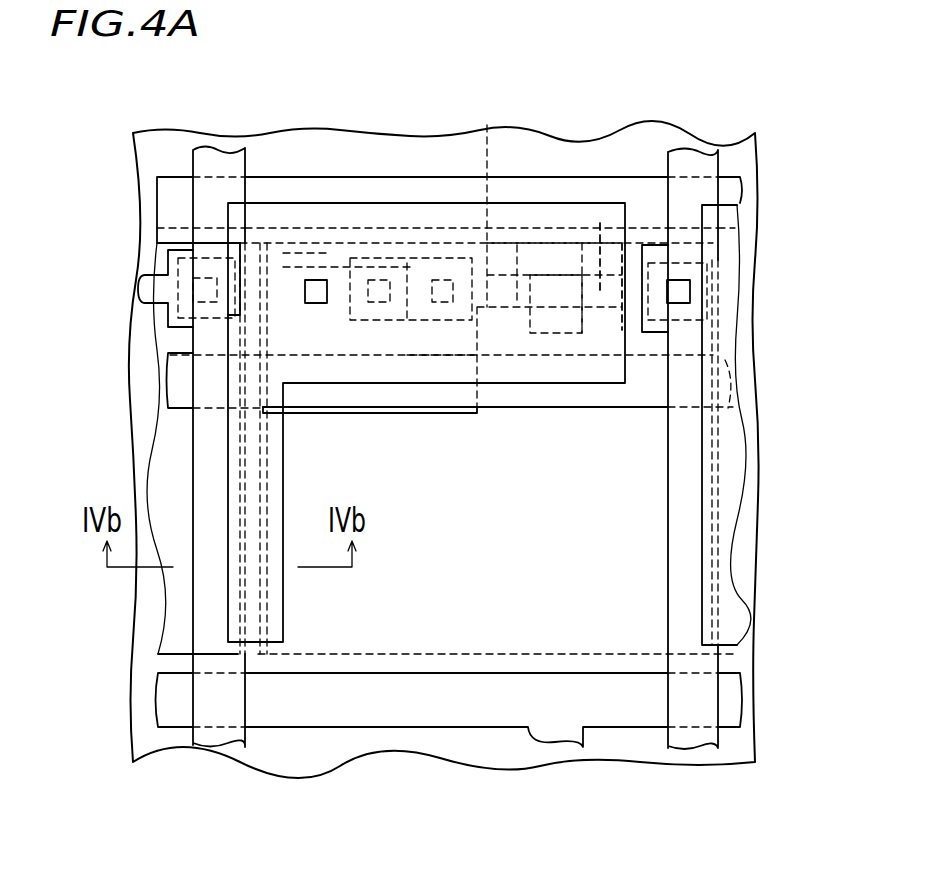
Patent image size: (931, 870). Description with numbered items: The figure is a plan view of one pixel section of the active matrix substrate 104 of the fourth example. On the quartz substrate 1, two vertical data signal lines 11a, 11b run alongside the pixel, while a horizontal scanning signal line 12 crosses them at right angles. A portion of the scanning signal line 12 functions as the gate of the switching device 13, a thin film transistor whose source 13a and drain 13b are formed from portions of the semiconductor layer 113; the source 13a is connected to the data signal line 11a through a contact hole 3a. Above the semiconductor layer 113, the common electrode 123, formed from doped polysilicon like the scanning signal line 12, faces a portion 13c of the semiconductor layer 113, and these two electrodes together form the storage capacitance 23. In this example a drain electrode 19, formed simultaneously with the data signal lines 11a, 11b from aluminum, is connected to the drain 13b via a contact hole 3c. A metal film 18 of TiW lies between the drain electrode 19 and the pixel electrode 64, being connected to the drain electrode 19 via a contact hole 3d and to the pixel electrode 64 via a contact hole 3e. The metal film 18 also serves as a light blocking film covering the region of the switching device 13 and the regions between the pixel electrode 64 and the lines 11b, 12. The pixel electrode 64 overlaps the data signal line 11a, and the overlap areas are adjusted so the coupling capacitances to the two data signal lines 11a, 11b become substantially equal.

The quartz substrate 1 is at (750, 530).
The data signal line 11a is at (690, 160).
The data signal line 11b is at (200, 148).
The scanning signal line 12 is at (500, 183).
The semiconductor layer 113 is at (487, 125).
The storage capacitance 23 is at (333, 395).
The common electrode 123 is at (330, 413).
The contact hole 3e is at (285, 372).
The metal film 18 is at (312, 280).
The portion of the semiconductor layer 13c is at (325, 253).
The drain electrode 19 is at (428, 258).
The contact hole 3d is at (384, 278).
The contact hole 3c is at (443, 278).
The drain 13b is at (517, 245).
The switching device 13 is at (555, 297).
The source 13a is at (602, 228).
The contact hole 3a is at (690, 287).
The pixel electrode 64 is at (348, 657).
The active matrix substrate 104 is at (571, 781).